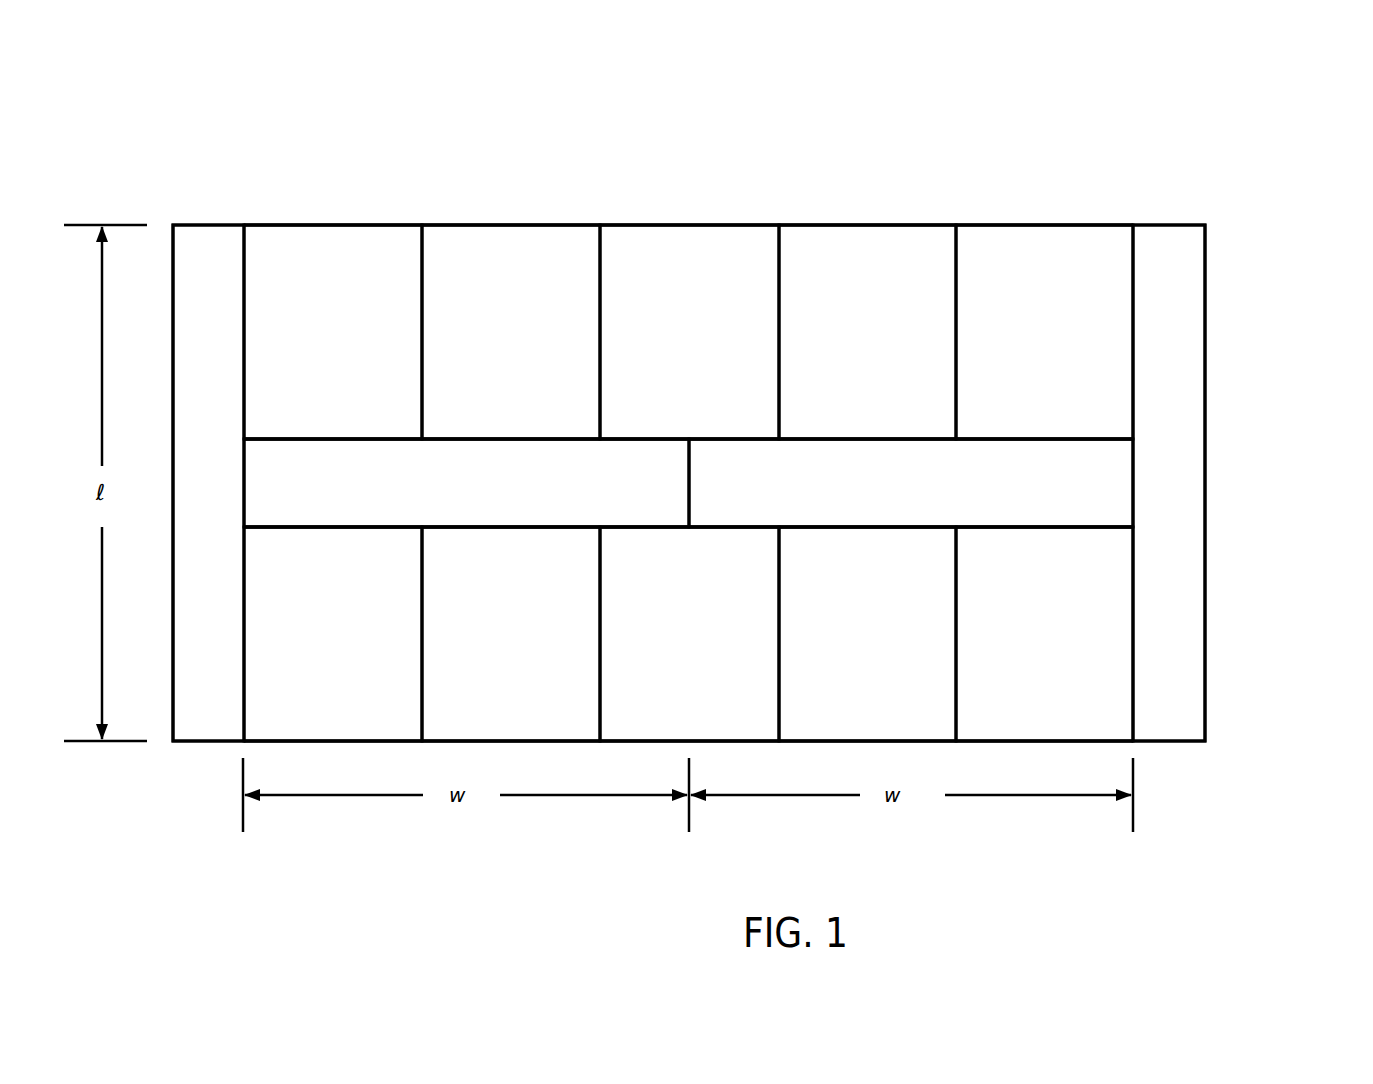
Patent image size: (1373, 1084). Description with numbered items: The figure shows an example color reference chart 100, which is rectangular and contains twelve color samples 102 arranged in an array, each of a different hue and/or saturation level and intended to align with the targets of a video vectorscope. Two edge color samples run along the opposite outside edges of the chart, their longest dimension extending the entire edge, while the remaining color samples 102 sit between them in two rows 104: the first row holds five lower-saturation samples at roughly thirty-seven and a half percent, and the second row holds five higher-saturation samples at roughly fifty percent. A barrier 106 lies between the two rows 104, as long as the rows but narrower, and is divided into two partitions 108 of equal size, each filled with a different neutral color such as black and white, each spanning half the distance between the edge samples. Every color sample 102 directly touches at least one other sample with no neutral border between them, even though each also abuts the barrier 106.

The color reference chart 100 is at (98, 54).
The color samples 102 is at (689, 483).
The rows 104 is at (804, 483).
The barrier 106 is at (1135, 465).
The partitions 108 is at (688, 483).